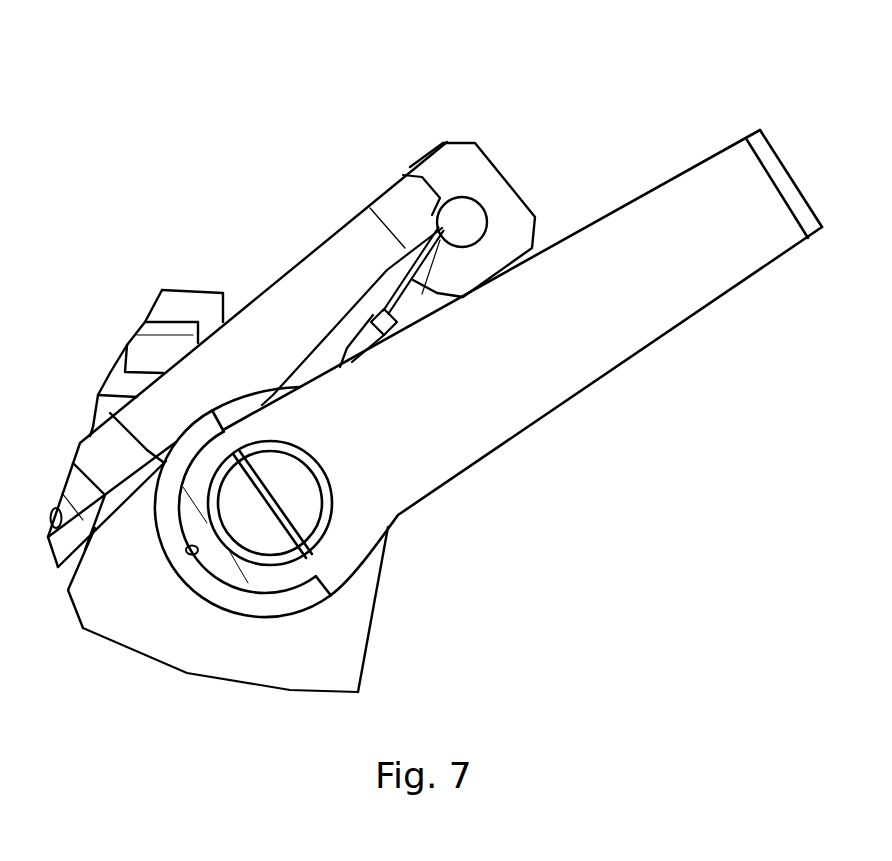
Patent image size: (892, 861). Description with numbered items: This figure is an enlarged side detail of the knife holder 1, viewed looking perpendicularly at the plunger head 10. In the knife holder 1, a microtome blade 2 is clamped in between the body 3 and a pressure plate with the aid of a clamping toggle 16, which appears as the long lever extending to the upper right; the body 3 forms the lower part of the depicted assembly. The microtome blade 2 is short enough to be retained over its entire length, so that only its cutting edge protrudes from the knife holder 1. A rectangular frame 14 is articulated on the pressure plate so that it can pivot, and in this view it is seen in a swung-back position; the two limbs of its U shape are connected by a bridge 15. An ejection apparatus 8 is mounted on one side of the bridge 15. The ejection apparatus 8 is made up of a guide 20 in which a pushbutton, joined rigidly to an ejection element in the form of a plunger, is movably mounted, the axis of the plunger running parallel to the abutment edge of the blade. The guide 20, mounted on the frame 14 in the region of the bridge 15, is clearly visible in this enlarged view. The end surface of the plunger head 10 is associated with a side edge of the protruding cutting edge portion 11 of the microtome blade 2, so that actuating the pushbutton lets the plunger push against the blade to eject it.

The knife holder 1 is at (478, 594).
The microtome blade 2 is at (408, 272).
The body 3 is at (240, 642).
The ejection apparatus 8 is at (476, 112).
The plunger head 10 is at (467, 220).
The protruding cutting edge portion 11 is at (455, 170).
The rectangular frame 14 is at (268, 317).
The bridge 15 is at (403, 199).
The clamping toggle 16 is at (542, 362).
The guide 20 is at (560, 234).